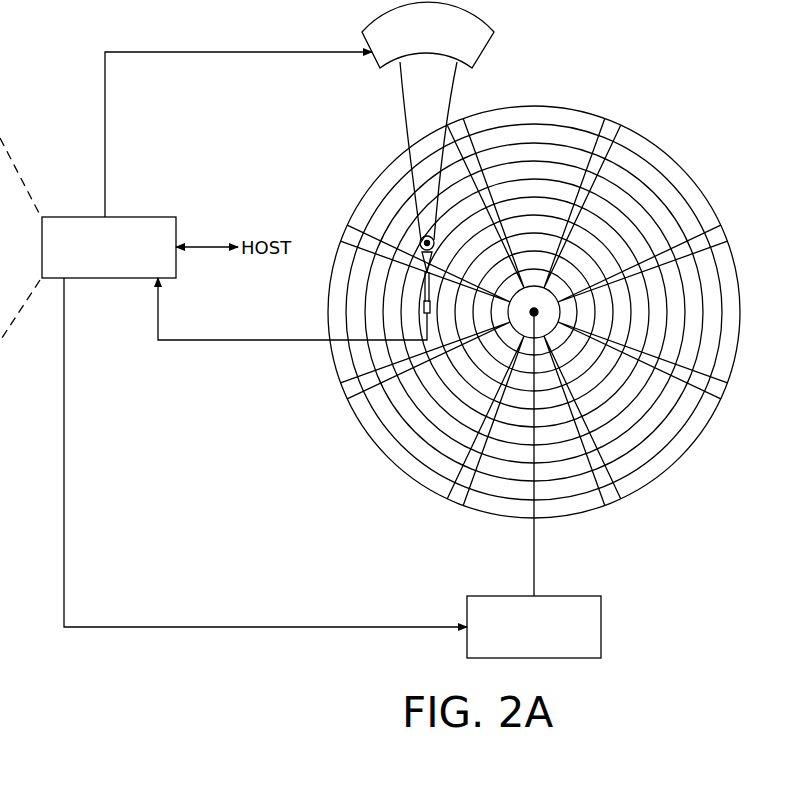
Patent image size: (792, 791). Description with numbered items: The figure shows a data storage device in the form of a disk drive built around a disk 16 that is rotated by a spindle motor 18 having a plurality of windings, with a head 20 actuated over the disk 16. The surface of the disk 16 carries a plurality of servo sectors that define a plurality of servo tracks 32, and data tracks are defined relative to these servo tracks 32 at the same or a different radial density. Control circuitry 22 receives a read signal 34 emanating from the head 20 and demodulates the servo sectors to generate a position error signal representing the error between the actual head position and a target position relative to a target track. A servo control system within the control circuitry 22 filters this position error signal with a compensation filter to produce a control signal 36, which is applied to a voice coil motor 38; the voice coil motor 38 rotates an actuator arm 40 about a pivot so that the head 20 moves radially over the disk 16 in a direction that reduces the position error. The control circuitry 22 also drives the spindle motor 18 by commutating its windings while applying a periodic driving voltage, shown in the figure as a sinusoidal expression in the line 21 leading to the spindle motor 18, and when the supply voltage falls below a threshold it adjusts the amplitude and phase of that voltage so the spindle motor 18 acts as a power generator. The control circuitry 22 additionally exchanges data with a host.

The disk 16 is at (534, 289).
The spindle motor 18 is at (601, 627).
The head 20 is at (421, 315).
The driving voltage signal 21 is at (64, 451).
The control circuitry 22 is at (143, 217).
The servo tracks 32 is at (536, 127).
The read signal 34 is at (233, 340).
The control signal 36 is at (105, 121).
The voice coil motor 38 is at (378, 68).
The actuator arm 40 is at (410, 134).